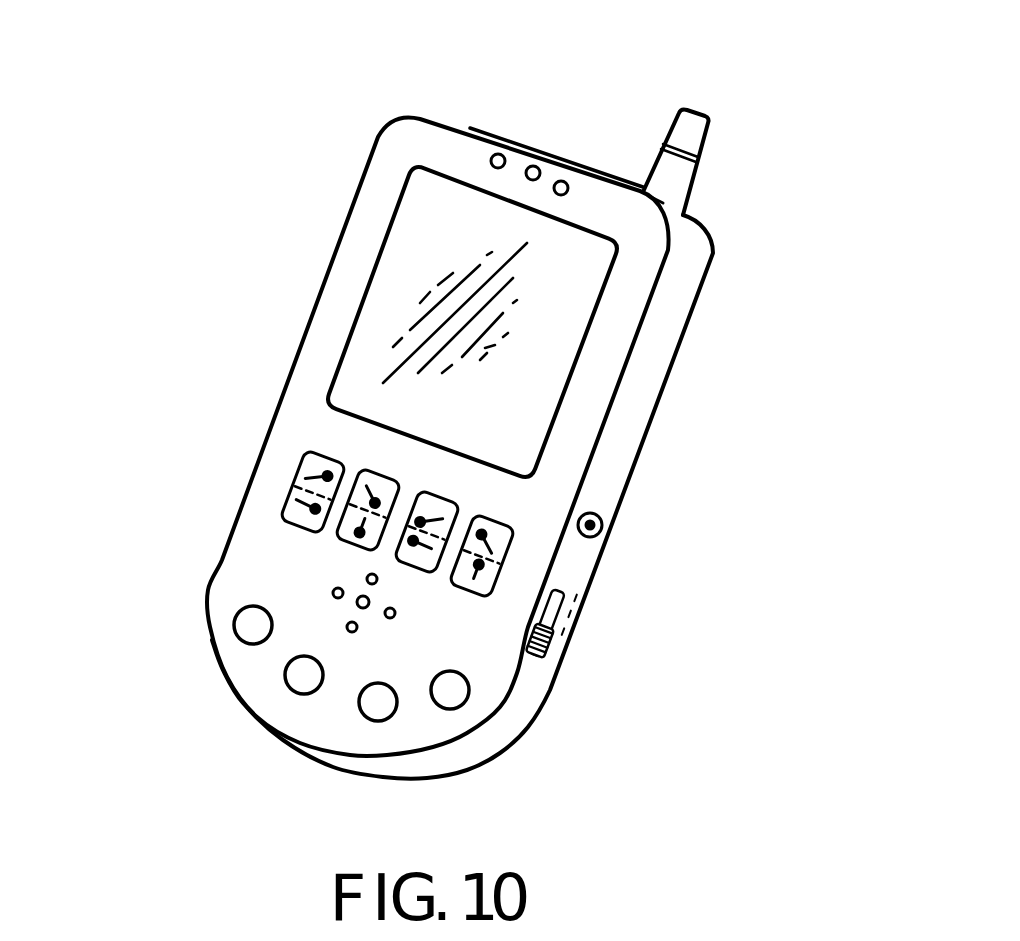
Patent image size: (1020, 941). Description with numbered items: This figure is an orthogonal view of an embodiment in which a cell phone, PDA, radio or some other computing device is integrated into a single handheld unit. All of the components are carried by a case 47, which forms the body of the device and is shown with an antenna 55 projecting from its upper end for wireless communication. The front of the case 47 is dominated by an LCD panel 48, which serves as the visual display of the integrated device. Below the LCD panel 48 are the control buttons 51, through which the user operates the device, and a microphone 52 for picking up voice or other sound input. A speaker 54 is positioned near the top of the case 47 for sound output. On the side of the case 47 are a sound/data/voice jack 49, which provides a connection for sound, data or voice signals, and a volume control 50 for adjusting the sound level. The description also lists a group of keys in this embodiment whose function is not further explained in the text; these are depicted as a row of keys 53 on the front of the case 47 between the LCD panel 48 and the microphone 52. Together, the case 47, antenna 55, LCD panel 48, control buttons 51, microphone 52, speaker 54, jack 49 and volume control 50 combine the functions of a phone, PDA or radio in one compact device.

The case 47 is at (713, 265).
The LCD panel 48 is at (567, 345).
The sound/data/voice jack 49 is at (600, 512).
The volume control 50 is at (563, 590).
The control buttons 51 is at (470, 690).
The microphone 52 is at (332, 588).
The function keys 53 is at (300, 470).
The speaker 54 is at (503, 158).
The antenna 55 is at (710, 133).